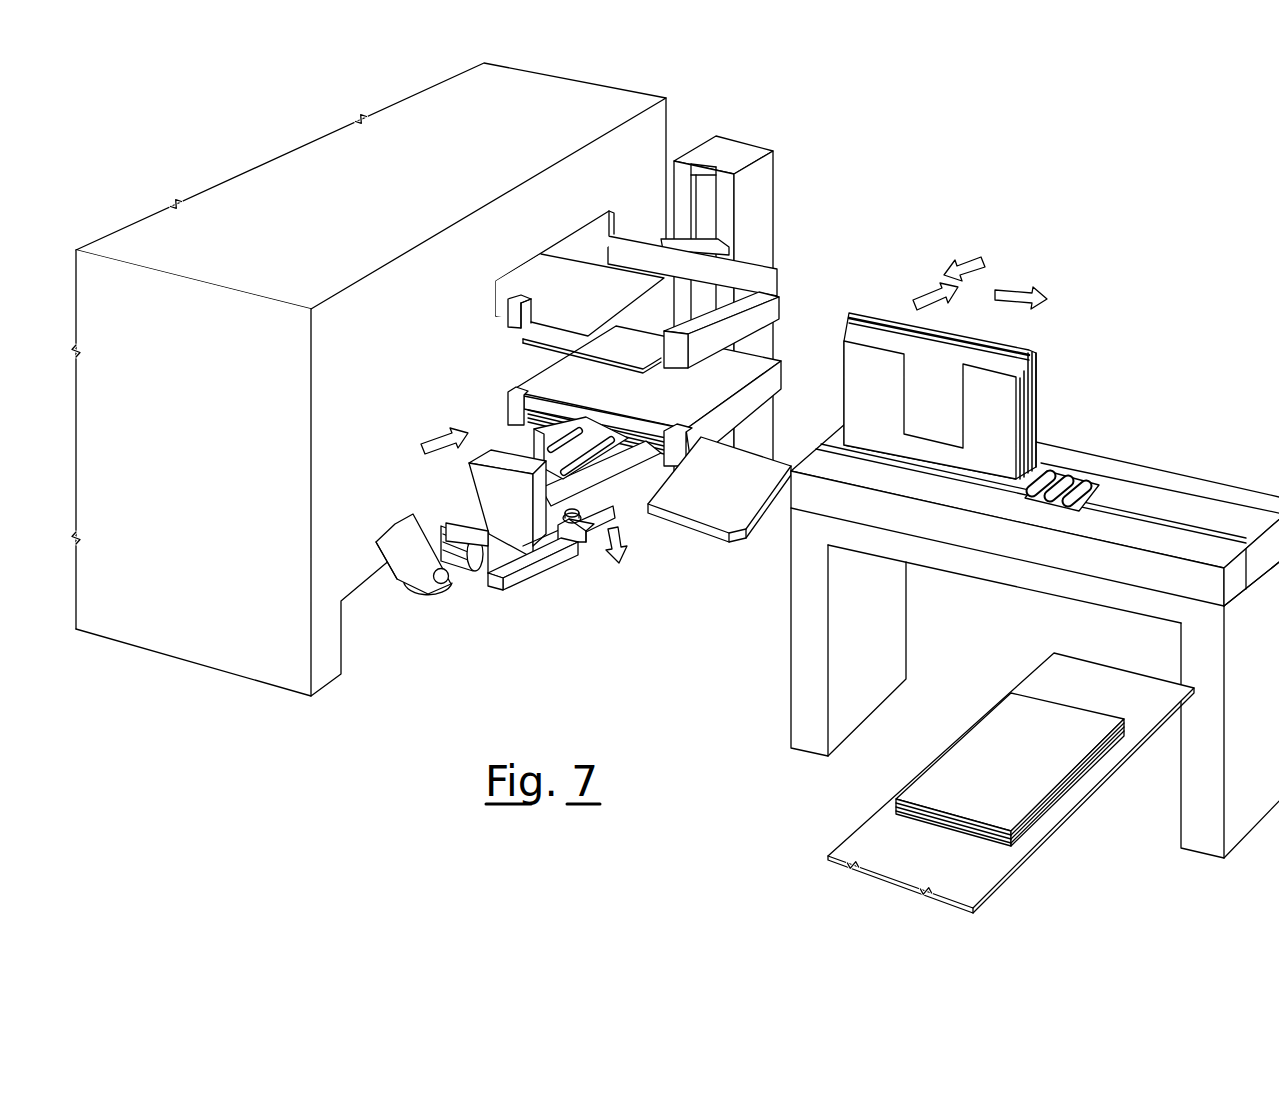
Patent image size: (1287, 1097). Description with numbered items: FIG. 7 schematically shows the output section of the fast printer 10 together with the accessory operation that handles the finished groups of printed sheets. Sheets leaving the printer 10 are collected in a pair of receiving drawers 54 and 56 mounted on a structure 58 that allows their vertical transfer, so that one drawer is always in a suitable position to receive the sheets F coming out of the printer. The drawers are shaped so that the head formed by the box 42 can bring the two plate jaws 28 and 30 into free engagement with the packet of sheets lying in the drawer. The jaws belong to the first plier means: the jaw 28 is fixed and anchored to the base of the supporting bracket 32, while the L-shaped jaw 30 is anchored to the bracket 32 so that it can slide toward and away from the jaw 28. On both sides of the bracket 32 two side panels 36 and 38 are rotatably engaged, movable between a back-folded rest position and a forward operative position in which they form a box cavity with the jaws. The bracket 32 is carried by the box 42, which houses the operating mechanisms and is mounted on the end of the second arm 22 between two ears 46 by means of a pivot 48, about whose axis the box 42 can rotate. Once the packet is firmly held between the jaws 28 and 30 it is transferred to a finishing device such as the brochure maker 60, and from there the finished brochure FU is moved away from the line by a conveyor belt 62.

The fast printer 10 is at (206, 461).
The second arm 22 is at (403, 547).
The fixed plate jaw 28 is at (612, 482).
The L-shaped plate jaw 30 is at (534, 430).
The supporting bracket 32 is at (540, 488).
The side panel 36 is at (443, 529).
The side panel 38 is at (551, 565).
The box 42 is at (481, 484).
The ears 46 is at (428, 588).
The pivot 48 is at (443, 583).
The receiving drawer 54 is at (780, 282).
The receiving drawer 56 is at (772, 392).
The structure 58 is at (785, 196).
The brochure maker 60 is at (1045, 399).
The conveyor belt 62 is at (880, 838).
The sheet F is at (548, 278).
The finished brochure FU is at (970, 762).